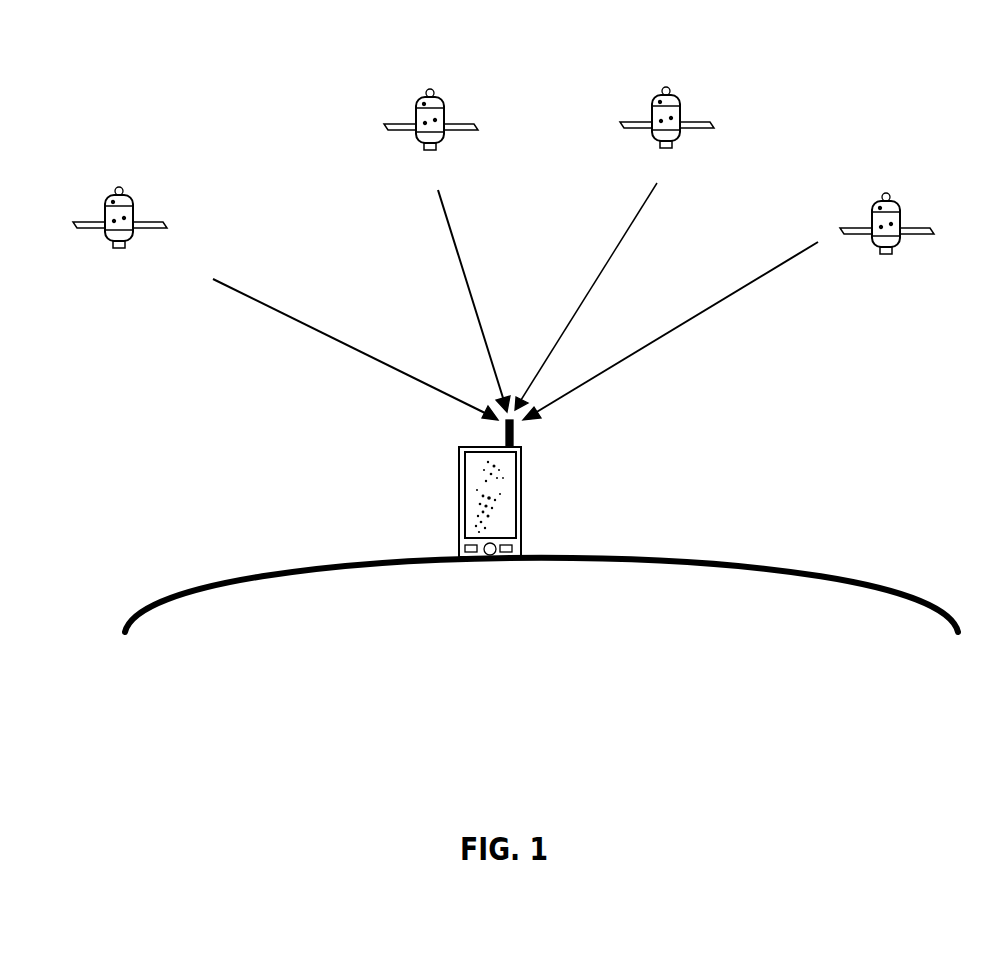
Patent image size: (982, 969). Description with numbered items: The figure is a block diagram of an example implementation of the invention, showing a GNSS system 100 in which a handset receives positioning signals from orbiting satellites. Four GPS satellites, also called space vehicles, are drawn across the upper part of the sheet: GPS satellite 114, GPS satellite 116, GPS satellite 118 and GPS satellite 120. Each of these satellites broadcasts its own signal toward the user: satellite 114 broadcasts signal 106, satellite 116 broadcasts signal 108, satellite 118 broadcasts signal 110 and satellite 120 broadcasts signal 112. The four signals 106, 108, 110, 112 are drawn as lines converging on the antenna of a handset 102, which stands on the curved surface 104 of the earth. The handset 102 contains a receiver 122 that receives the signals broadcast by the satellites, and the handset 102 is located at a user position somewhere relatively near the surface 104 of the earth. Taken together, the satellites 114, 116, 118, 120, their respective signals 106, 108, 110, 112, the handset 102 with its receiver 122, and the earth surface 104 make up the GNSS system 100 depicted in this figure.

The GNSS system 100 is at (810, 135).
The handset 102 is at (520, 515).
The surface of earth 104 is at (402, 569).
The signal 106 is at (333, 340).
The signal 108 is at (462, 268).
The signal 110 is at (605, 268).
The signal 112 is at (650, 340).
The GPS satellite 114 is at (120, 231).
The GPS satellite 116 is at (430, 135).
The GPS satellite 118 is at (666, 132).
The GPS satellite 120 is at (885, 240).
The receiver 122 is at (484, 486).